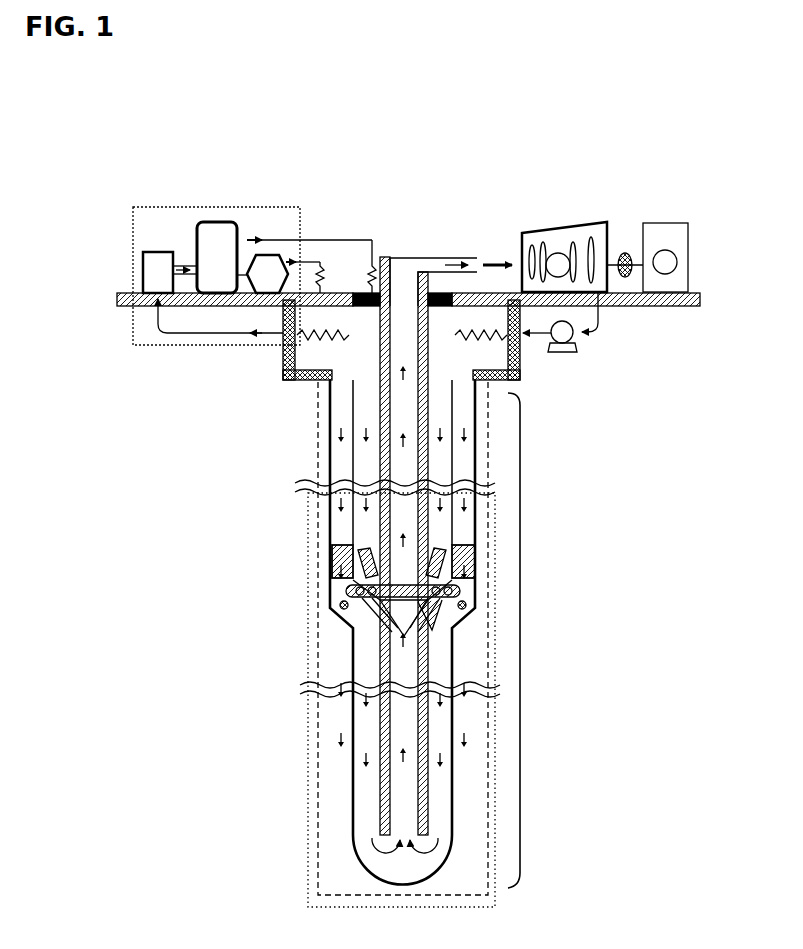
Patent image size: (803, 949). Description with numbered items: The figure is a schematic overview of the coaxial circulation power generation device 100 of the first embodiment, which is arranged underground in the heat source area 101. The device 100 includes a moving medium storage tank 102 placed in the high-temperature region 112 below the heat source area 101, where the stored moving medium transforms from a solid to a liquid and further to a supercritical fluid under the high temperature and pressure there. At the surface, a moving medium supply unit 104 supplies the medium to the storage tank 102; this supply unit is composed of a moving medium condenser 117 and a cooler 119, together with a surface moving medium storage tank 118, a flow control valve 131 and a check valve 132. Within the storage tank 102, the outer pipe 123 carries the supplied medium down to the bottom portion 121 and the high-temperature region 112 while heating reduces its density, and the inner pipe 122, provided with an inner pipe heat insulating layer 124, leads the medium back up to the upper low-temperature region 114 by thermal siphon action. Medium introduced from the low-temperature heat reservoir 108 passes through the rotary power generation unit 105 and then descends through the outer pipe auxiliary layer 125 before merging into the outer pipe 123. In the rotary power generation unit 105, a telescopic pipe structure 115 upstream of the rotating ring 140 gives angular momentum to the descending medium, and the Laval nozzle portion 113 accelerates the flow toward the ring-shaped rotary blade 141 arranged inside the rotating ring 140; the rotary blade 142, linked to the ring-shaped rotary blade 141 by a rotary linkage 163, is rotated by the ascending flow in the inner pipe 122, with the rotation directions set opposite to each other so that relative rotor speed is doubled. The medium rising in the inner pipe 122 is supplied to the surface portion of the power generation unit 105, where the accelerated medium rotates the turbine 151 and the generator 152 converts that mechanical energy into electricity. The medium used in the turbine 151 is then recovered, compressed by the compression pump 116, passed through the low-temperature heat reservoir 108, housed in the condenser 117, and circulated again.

The coaxial circulation power generation device 100 is at (668, 142).
The heat source area 101 is at (316, 475).
The moving medium storage tank 102 is at (526, 633).
The moving medium supply unit 104 is at (172, 203).
The rotary power generation unit 105 is at (302, 545).
The low-temperature heat reservoir 108 is at (290, 365).
The high-temperature region 112 is at (305, 800).
The Laval nozzle portion 113 is at (342, 606).
The upper low-temperature region 114 is at (118, 290).
The telescopic pipe structure 115 is at (345, 550).
The compression pump 116 is at (588, 340).
The moving medium condenser 117 is at (148, 300).
The moving medium storage tank 118 is at (217, 237).
The cooler 119 is at (288, 253).
The bottom portion 121 is at (400, 864).
The inner pipe 122 is at (400, 802).
The outer pipe 123 is at (437, 735).
The inner pipe heat insulating layer 124 is at (392, 436).
The outer pipe auxiliary layer 125 is at (465, 468).
The flow control valve 131 is at (325, 262).
The check valve 132 is at (392, 405).
The rotating ring 140 is at (340, 582).
The ring-shaped rotary blade 141 is at (390, 633).
The rotary blade 142 is at (430, 615).
The turbine 151 is at (580, 216).
The generator 152 is at (674, 221).
The rotary linkage 163 is at (400, 635).